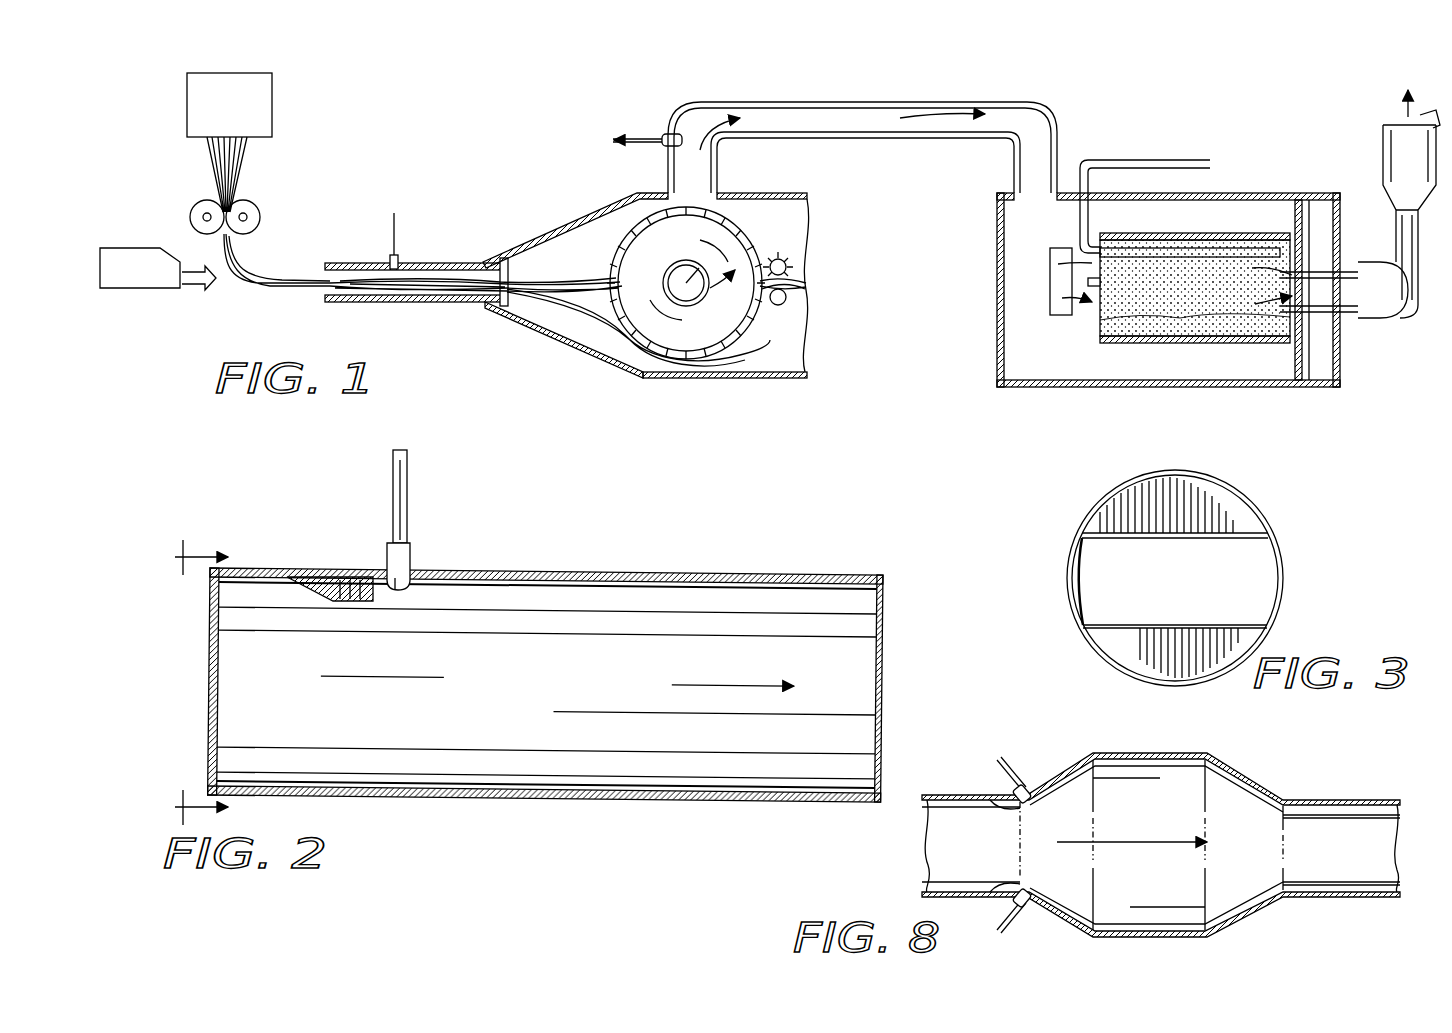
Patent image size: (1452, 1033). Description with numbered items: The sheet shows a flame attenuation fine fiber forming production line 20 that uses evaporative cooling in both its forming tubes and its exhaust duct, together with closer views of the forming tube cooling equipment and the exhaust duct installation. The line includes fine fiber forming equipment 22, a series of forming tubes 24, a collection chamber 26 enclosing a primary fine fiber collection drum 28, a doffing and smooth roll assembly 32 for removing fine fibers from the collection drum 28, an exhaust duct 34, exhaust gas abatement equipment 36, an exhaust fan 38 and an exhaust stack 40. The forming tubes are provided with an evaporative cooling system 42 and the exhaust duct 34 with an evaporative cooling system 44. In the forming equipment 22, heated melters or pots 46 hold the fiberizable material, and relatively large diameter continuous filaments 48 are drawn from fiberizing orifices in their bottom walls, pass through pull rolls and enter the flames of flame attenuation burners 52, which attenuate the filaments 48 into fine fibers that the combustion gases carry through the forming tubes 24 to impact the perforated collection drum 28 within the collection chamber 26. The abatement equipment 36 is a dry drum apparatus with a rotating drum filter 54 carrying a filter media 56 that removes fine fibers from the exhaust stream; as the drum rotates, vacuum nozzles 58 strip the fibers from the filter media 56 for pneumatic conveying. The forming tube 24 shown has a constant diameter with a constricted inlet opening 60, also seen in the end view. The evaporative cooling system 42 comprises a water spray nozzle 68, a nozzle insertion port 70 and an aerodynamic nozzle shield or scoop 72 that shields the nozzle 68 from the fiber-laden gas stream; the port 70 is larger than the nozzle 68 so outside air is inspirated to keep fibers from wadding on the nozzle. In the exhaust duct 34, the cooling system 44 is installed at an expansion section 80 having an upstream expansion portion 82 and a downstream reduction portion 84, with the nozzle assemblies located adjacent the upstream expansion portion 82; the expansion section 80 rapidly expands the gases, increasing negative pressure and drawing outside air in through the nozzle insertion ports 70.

In FIG. 1, the fine fiber forming production line 20 is at (1122, 116).
In FIG. 1, the fine fiber forming equipment 22 is at (338, 112).
In FIG. 1, the forming tube 24 is at (400, 302).
In FIG. 2, the forming tube 24 is at (643, 553).
In FIG. 3, the forming tube 24 is at (1268, 505).
In FIG. 1, the collection chamber 26 is at (812, 350).
In FIG. 1, the primary fine fiber collection drum 28 is at (740, 226).
In FIG. 1, the doffing and smooth roll assembly 32 is at (803, 265).
In FIG. 1, the exhaust duct 34 is at (870, 101).
In FIG. 8, the exhaust duct 34 is at (1345, 795).
In FIG. 1, the exhaust gas abatement equipment 36 is at (1242, 390).
In FIG. 1, the exhaust fan 38 is at (1402, 302).
In FIG. 1, the exhaust stack 40 is at (1386, 174).
In FIG. 1, the evaporative cooling system 42 is at (342, 258).
In FIG. 1, the evaporative cooling system 44 is at (652, 114).
In FIG. 1, the melters or pots 46 is at (262, 93).
In FIG. 1, the continuous filaments 48 is at (240, 145).
In FIG. 1, the flame attenuation burners 52 is at (138, 248).
In FIG. 1, the rotating drum filter 54 is at (1100, 322).
In FIG. 1, the filter media 56 is at (1210, 300).
In FIG. 1, the vacuum nozzles 58 is at (1172, 236).
In FIG. 2, the constricted inlet opening 60 is at (208, 698).
In FIG. 3, the constricted inlet opening 60 is at (1285, 597).
In FIG. 1, the water spray nozzle 68 is at (398, 262).
In FIG. 2, the water spray nozzle 68 is at (388, 565).
In FIG. 8, the water spray nozzle 68 is at (1026, 780).
In FIG. 2, the nozzle insertion port 70 is at (398, 590).
In FIG. 8, the nozzle insertion port 70 is at (1032, 792).
In FIG. 1, the aerodynamic nozzle shield or scoop 72 is at (386, 264).
In FIG. 2, the aerodynamic nozzle shield or scoop 72 is at (335, 602).
In FIG. 8, the aerodynamic nozzle shield or scoop 72 is at (1000, 812).
In FIG. 8, the expansion section 80 is at (1186, 750).
In FIG. 8, the upstream expansion portion 82 is at (1072, 765).
In FIG. 8, the downstream reduction portion 84 is at (1247, 778).